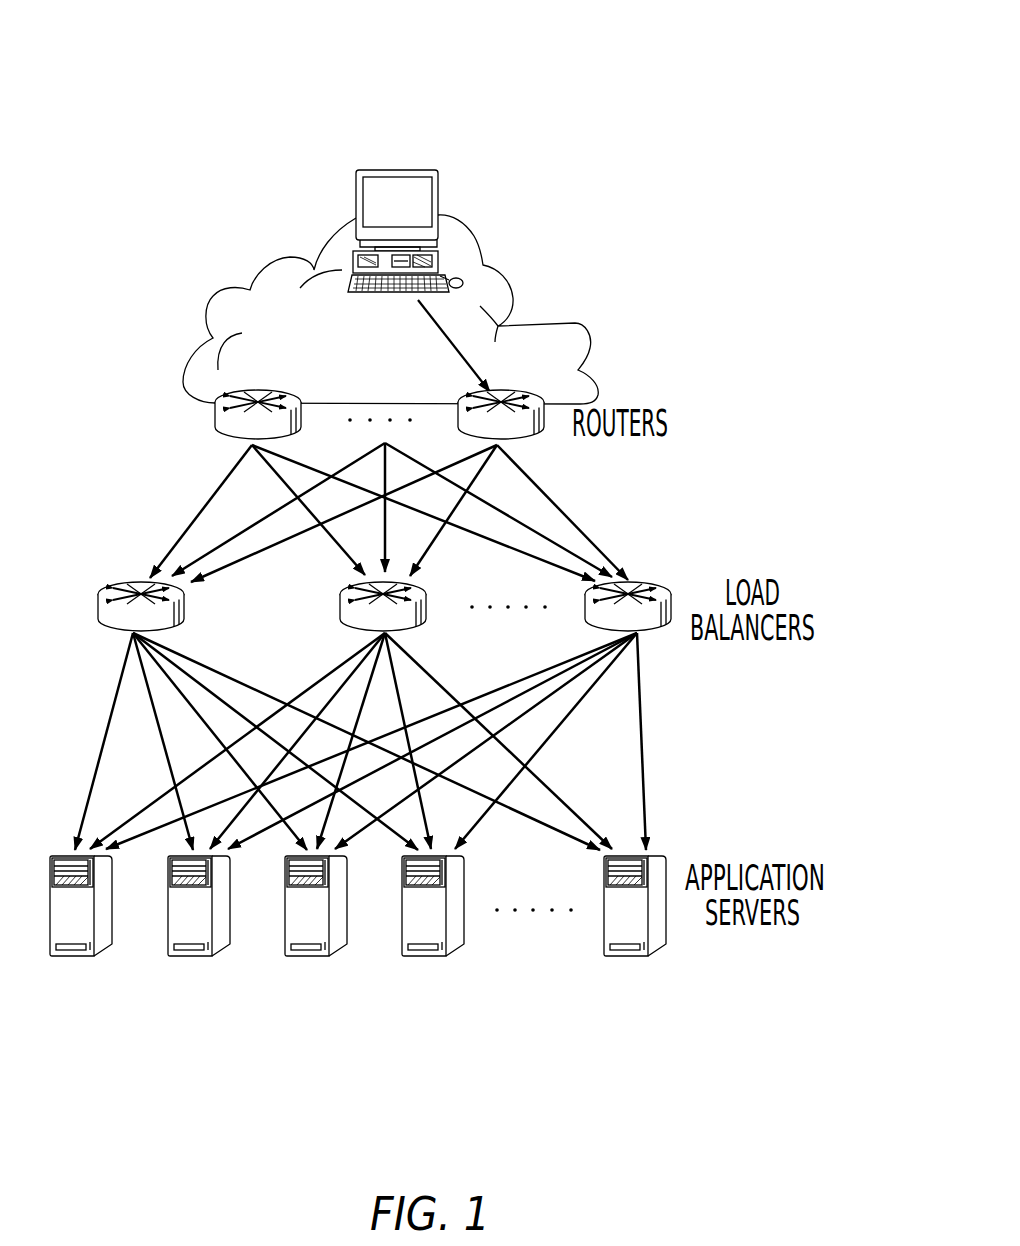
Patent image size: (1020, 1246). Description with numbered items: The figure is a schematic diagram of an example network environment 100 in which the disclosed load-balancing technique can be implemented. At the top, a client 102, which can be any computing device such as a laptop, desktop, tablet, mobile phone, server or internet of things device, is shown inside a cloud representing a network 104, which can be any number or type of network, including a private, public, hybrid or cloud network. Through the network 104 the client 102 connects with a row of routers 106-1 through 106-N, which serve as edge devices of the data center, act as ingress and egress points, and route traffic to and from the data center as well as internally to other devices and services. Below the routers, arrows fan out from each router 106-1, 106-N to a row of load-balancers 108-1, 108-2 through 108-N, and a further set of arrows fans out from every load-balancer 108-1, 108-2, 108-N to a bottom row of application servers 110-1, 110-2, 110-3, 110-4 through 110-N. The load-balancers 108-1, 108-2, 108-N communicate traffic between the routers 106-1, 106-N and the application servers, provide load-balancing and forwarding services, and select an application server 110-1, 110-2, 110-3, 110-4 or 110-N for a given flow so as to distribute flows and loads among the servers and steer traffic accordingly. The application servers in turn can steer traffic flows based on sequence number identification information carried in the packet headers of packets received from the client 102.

The network environment 100 is at (822, 52).
The client 102 is at (357, 185).
The network 104 is at (234, 291).
The router 106-1 is at (215, 406).
The router 106-N is at (530, 440).
The load-balancer 108-1 is at (100, 606).
The load-balancer 108-2 is at (341, 605).
The load-balancer 108-N is at (657, 587).
The application server 110-1 is at (77, 958).
The application server 110-2 is at (195, 958).
The application server 110-3 is at (312, 958).
The application server 110-4 is at (429, 958).
The application server 110-N is at (631, 958).